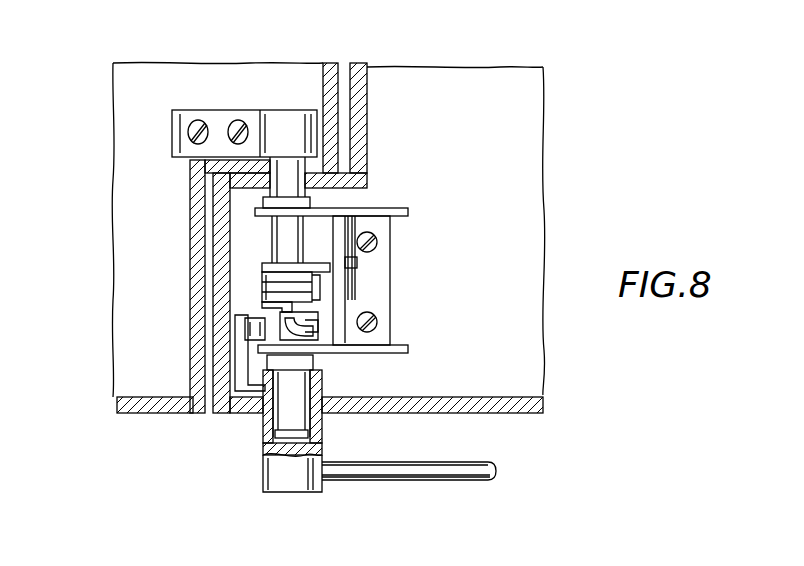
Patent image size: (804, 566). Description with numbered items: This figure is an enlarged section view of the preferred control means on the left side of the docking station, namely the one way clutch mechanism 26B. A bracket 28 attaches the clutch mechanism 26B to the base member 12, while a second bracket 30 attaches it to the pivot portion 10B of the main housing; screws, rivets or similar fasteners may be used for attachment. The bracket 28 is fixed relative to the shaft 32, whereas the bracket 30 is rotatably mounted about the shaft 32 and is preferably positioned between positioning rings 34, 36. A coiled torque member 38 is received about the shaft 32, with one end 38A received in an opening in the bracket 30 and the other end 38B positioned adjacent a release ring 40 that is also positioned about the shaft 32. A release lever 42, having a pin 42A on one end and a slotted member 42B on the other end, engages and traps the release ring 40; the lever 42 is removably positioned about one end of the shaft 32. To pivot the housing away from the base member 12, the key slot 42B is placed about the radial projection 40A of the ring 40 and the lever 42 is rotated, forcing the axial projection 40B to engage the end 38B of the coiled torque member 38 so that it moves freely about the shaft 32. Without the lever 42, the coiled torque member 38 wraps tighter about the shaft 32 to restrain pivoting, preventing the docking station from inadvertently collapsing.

The base member 12 is at (176, 77).
The pivot portion 10B is at (418, 80).
The bracket 28 is at (222, 120).
The shaft 32 is at (300, 176).
The positioning ring 34 is at (313, 203).
The bracket 30 is at (383, 243).
The end of coiled torque member 38A is at (357, 264).
The coiled torque member 38 is at (320, 288).
The other end of coiled torque member 38B is at (270, 303).
The release ring 40 is at (270, 365).
The radial projection 40A is at (247, 330).
The axial projection 40B is at (310, 330).
The slotted member 42B is at (245, 357).
The positioning ring 36 is at (313, 362).
The release lever 42 is at (295, 480).
The pin 42A is at (473, 462).
The one way clutch mechanism 26B is at (410, 497).